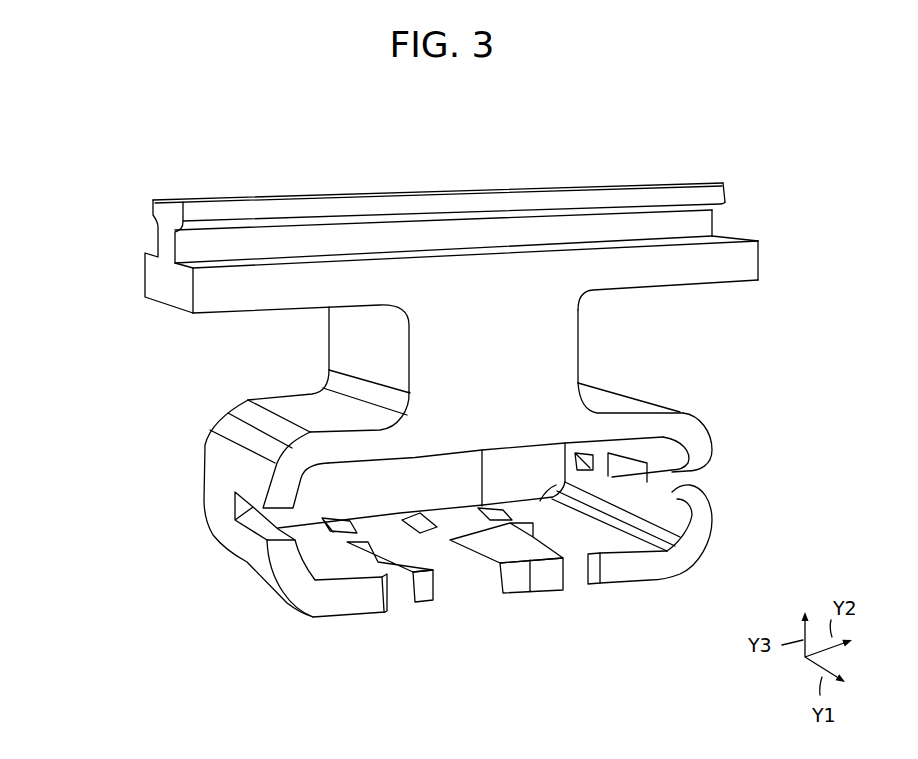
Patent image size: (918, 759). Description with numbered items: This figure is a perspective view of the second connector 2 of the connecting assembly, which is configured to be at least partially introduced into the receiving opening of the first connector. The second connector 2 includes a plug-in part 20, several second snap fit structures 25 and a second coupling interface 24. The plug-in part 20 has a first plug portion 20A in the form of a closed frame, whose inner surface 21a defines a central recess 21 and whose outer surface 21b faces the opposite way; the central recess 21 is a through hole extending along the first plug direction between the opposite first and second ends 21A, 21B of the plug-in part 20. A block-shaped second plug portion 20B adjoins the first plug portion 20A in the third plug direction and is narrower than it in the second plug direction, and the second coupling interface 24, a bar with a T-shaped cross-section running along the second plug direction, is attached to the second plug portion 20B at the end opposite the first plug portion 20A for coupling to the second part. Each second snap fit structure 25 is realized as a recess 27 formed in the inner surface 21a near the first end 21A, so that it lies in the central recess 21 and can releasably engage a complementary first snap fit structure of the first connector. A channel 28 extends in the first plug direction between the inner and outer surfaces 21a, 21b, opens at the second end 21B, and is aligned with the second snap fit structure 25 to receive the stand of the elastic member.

The second connector 2 is at (88, 146).
The second coupling interface 24 is at (314, 187).
The plug-in part 20 is at (205, 432).
The first plug portion 20A is at (726, 433).
The second plug portion 20B is at (594, 344).
The central recess 21 is at (432, 463).
The first end 21A is at (281, 393).
The second end 21B is at (624, 572).
The inner surface 21a is at (543, 506).
The outer surface 21b is at (353, 622).
The second snap fit structure 25 is at (455, 471).
The recess 27 is at (333, 522).
The channel 28 is at (672, 492).